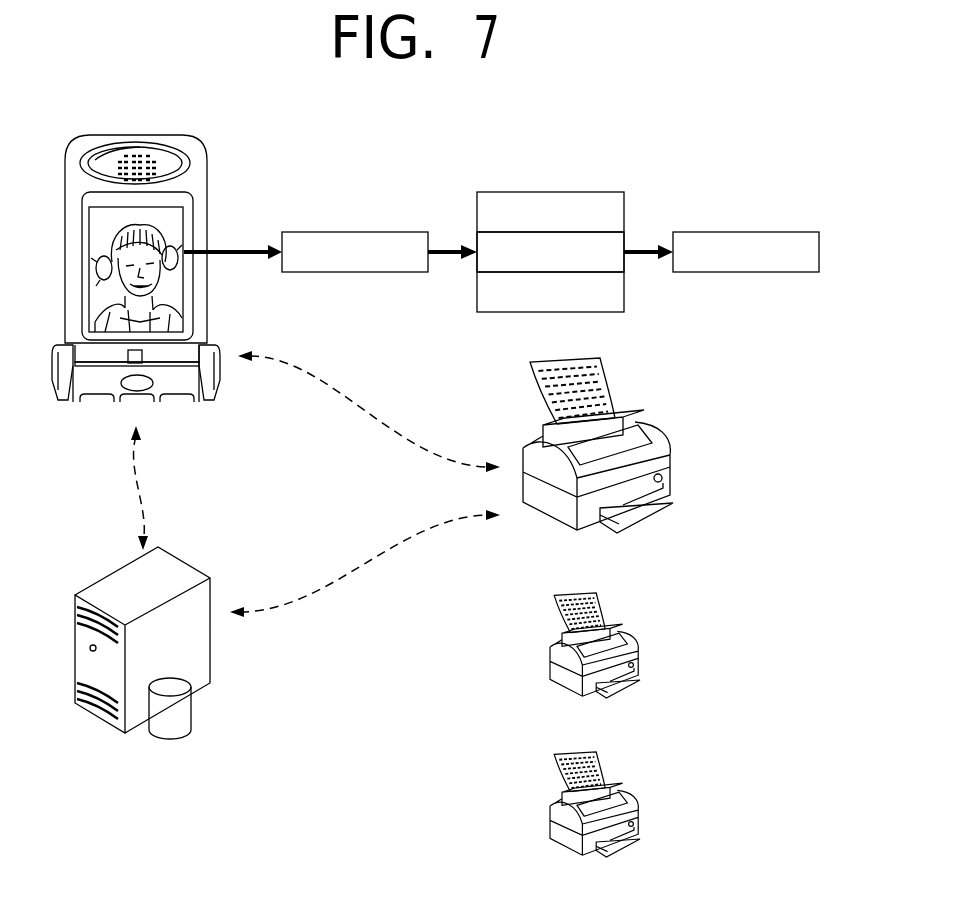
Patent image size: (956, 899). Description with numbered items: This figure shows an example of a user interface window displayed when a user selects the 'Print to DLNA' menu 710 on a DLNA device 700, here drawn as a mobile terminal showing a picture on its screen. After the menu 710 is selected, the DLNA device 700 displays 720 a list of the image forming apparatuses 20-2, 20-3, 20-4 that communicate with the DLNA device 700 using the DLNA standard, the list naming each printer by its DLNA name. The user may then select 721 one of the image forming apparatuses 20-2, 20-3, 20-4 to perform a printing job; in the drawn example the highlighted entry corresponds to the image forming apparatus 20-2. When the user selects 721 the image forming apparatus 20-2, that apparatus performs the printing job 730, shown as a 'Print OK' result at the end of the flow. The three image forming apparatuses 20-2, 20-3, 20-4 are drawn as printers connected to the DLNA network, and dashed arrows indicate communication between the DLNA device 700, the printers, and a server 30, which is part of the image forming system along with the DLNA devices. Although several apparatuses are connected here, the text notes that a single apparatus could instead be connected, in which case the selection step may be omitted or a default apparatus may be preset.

The DLNA device 700 is at (178, 208).
The 'Print to DLNA' menu 710 is at (348, 232).
The display of image forming apparatuses 720 is at (534, 192).
The selection of an image forming apparatus 721 is at (625, 238).
The printing job 730 is at (770, 232).
The image forming apparatus 20-2 is at (672, 475).
The image forming apparatus 20-3 is at (640, 660).
The image forming apparatus 20-4 is at (640, 820).
The server 30 is at (212, 645).